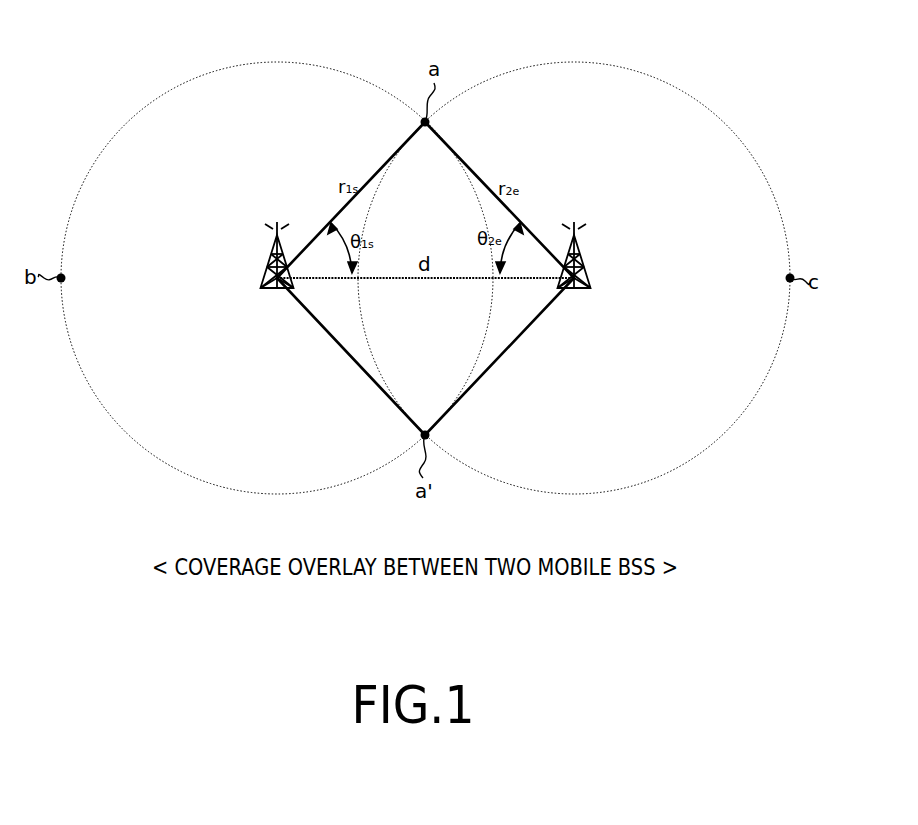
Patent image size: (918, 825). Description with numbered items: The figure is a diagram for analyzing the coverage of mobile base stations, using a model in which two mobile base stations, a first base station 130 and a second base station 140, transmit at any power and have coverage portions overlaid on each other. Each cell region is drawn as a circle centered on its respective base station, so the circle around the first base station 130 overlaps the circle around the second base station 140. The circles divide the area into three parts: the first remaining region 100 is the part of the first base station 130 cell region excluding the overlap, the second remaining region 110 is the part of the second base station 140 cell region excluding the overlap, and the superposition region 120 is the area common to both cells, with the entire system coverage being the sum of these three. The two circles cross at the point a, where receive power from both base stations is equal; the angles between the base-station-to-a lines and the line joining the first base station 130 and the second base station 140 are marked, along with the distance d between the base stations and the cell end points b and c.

The C1 100 is at (277, 278).
The C2 110 is at (574, 278).
The C3 120 is at (425, 279).
The BS1 130 is at (275, 281).
The BS2 140 is at (571, 281).